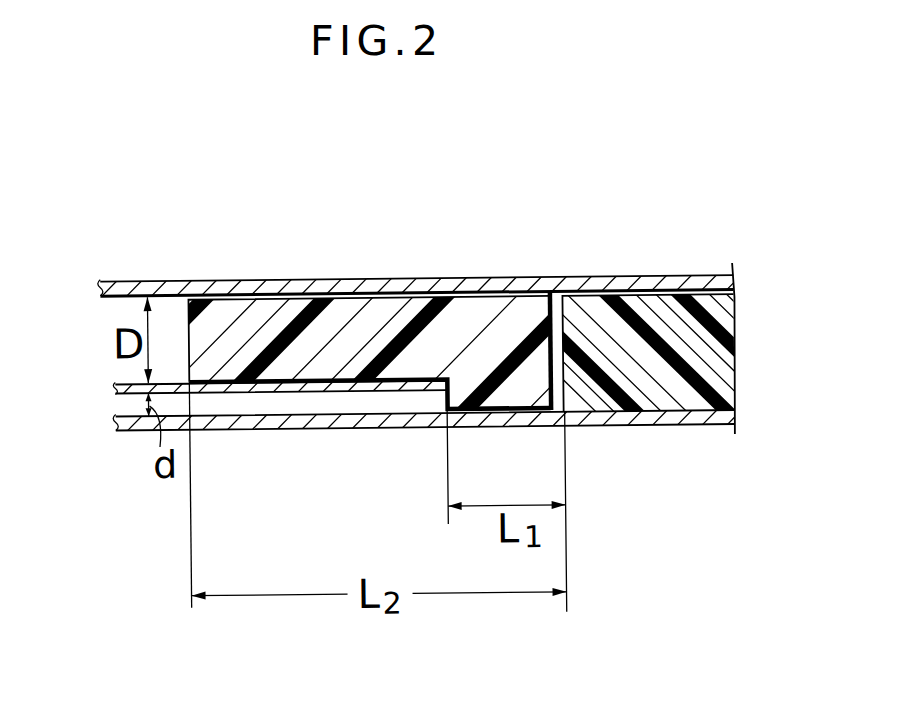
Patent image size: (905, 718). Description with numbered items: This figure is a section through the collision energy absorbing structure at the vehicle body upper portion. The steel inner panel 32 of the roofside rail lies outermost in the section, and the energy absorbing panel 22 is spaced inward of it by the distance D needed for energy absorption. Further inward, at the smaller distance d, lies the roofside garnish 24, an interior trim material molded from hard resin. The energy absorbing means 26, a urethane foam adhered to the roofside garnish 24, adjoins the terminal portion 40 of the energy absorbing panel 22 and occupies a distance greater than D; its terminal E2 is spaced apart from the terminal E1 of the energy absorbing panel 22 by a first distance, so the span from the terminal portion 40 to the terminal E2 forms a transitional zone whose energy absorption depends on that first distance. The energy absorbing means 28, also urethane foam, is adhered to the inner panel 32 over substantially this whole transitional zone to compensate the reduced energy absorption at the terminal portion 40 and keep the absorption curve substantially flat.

The energy absorbing panel 22 is at (338, 398).
The roofside garnish 24 is at (654, 428).
The energy absorbing means 26 is at (692, 297).
The energy absorbing means 28 is at (514, 302).
The inner panel 32 is at (448, 278).
The terminal portion 40 is at (267, 388).
The terminal of the energy absorbing panel E1 is at (443, 394).
The terminal of the energy absorbing means E2 is at (553, 322).